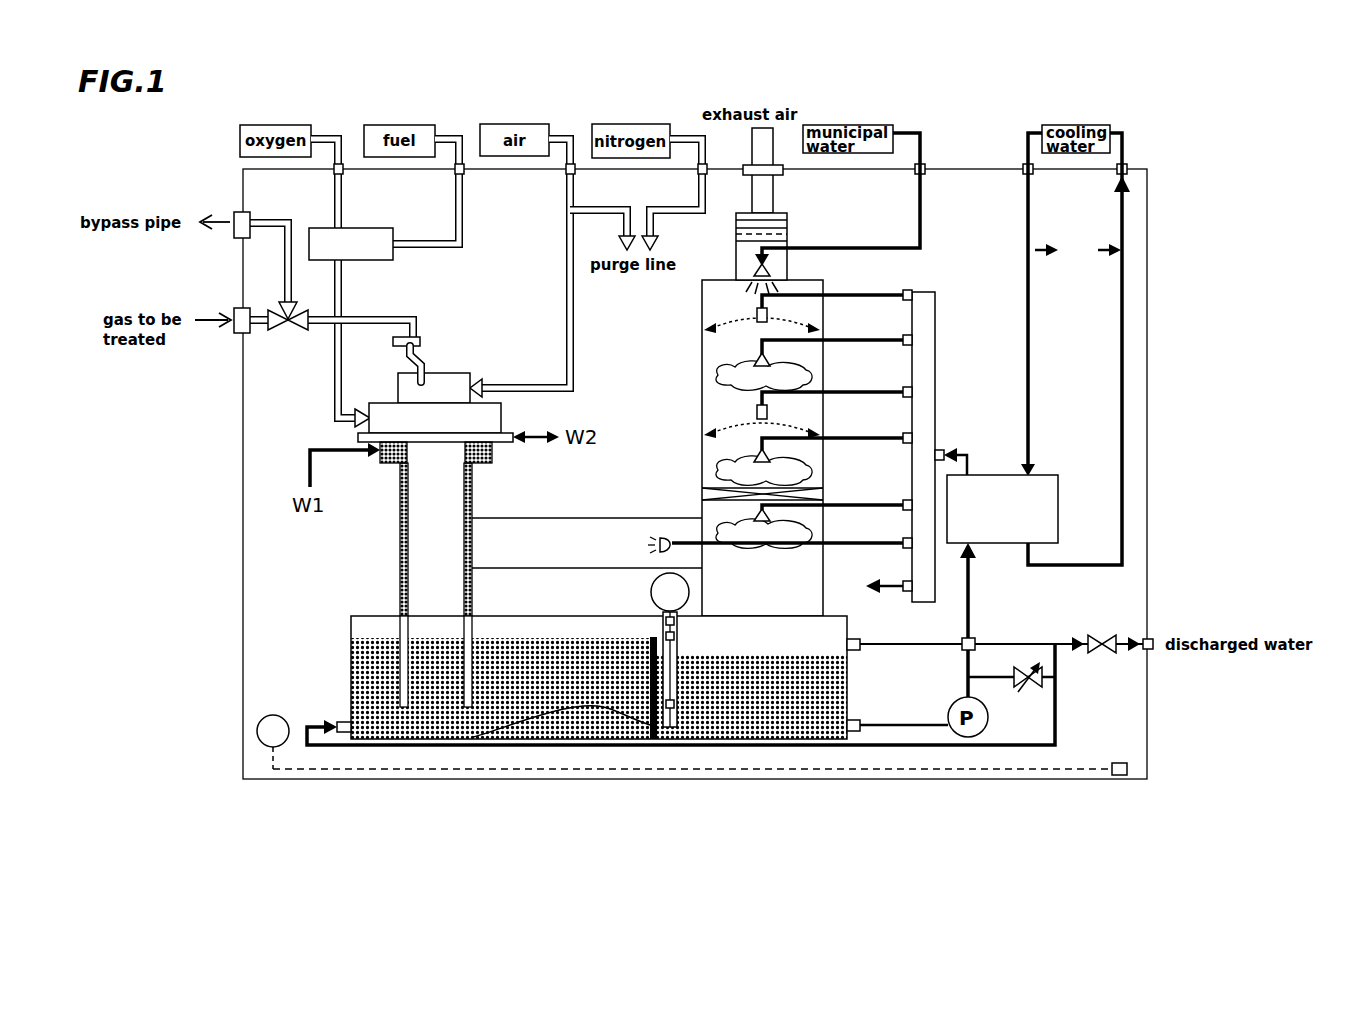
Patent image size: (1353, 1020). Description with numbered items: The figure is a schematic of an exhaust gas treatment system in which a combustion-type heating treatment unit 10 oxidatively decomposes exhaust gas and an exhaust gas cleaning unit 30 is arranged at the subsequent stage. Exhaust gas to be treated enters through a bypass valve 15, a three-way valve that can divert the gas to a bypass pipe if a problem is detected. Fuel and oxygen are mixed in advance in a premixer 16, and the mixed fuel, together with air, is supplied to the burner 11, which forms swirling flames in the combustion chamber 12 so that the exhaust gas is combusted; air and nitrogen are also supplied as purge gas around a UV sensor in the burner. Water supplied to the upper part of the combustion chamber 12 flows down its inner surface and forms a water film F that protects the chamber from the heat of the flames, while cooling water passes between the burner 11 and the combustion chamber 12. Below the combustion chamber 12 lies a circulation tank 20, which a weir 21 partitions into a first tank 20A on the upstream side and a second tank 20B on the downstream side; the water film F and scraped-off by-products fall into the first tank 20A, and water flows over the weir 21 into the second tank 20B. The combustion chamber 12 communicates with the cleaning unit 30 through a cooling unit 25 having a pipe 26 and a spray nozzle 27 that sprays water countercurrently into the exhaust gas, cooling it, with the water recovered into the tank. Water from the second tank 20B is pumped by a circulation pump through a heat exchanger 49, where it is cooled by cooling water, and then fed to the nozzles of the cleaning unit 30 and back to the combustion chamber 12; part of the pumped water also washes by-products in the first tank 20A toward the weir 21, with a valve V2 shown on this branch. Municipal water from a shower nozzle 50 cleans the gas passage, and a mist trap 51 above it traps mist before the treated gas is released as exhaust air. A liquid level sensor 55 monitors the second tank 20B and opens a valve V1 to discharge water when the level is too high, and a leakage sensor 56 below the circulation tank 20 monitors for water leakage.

The heating treatment unit 10 is at (423, 442).
The burner 11 is at (446, 373).
The combustion chamber 12 is at (449, 502).
The bypass valve 15 is at (288, 331).
The premixer 16 is at (378, 228).
The circulation tank 20 is at (577, 706).
The first tank 20A is at (395, 718).
The second tank 20B is at (755, 715).
The weir 21 is at (650, 637).
The cooling unit 25 is at (642, 495).
The pipe 26 is at (604, 518).
The spray nozzle 27 is at (668, 535).
The exhaust gas cleaning unit 30 is at (676, 406).
The heat exchanger 49 is at (985, 475).
The shower nozzle 50 is at (778, 263).
The mist trap 51 is at (788, 218).
The liquid level sensor 55 is at (651, 592).
The leakage sensor 56 is at (257, 731).
The valve V1 is at (1110, 654).
The flow control valve V2 is at (1030, 684).
The water film F is at (407, 527).